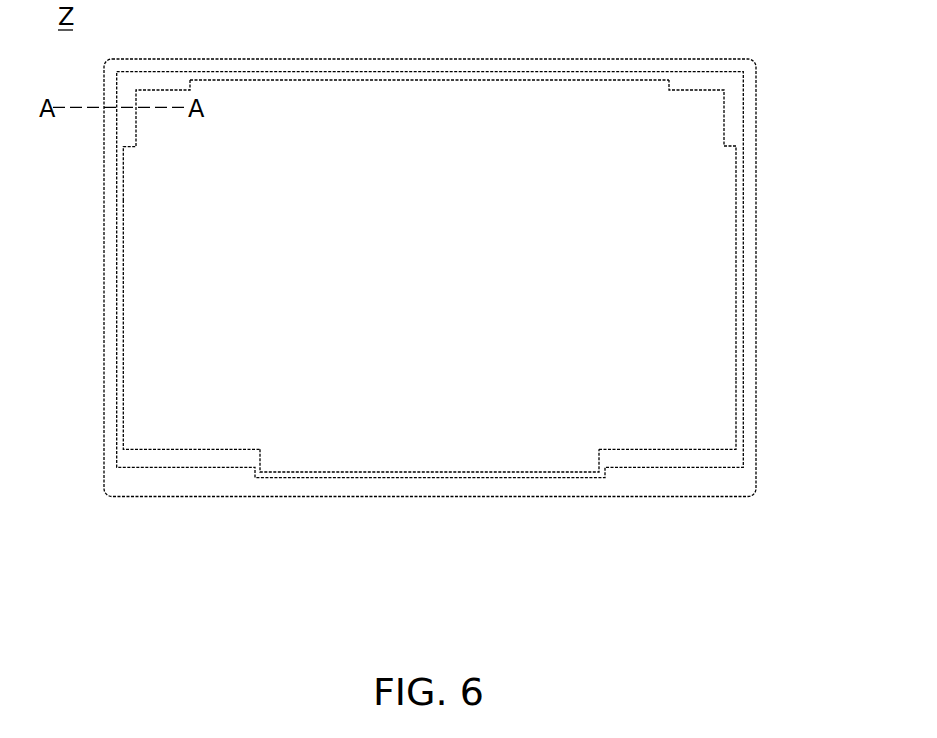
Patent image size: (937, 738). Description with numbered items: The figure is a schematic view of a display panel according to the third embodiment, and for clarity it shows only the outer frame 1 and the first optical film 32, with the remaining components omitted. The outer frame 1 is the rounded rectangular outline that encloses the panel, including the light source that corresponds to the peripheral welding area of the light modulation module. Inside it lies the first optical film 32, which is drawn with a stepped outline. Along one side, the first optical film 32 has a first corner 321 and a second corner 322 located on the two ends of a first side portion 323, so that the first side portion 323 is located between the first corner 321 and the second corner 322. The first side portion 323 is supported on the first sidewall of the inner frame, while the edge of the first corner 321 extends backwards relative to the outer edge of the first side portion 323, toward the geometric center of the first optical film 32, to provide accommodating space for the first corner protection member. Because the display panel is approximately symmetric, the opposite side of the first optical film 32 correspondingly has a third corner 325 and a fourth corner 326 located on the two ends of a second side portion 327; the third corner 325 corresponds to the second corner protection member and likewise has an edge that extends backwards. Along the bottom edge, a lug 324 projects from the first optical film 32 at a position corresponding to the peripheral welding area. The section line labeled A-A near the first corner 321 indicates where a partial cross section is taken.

The outer frame 1 is at (110, 226).
The first optical film 32 is at (721, 675).
The first corner 321 is at (157, 122).
The second corner 322 is at (155, 405).
The first side portion 323 is at (130, 279).
The lug 324 is at (303, 458).
The third corner 325 is at (703, 123).
The fourth corner 326 is at (703, 405).
The second side portion 327 is at (728, 279).